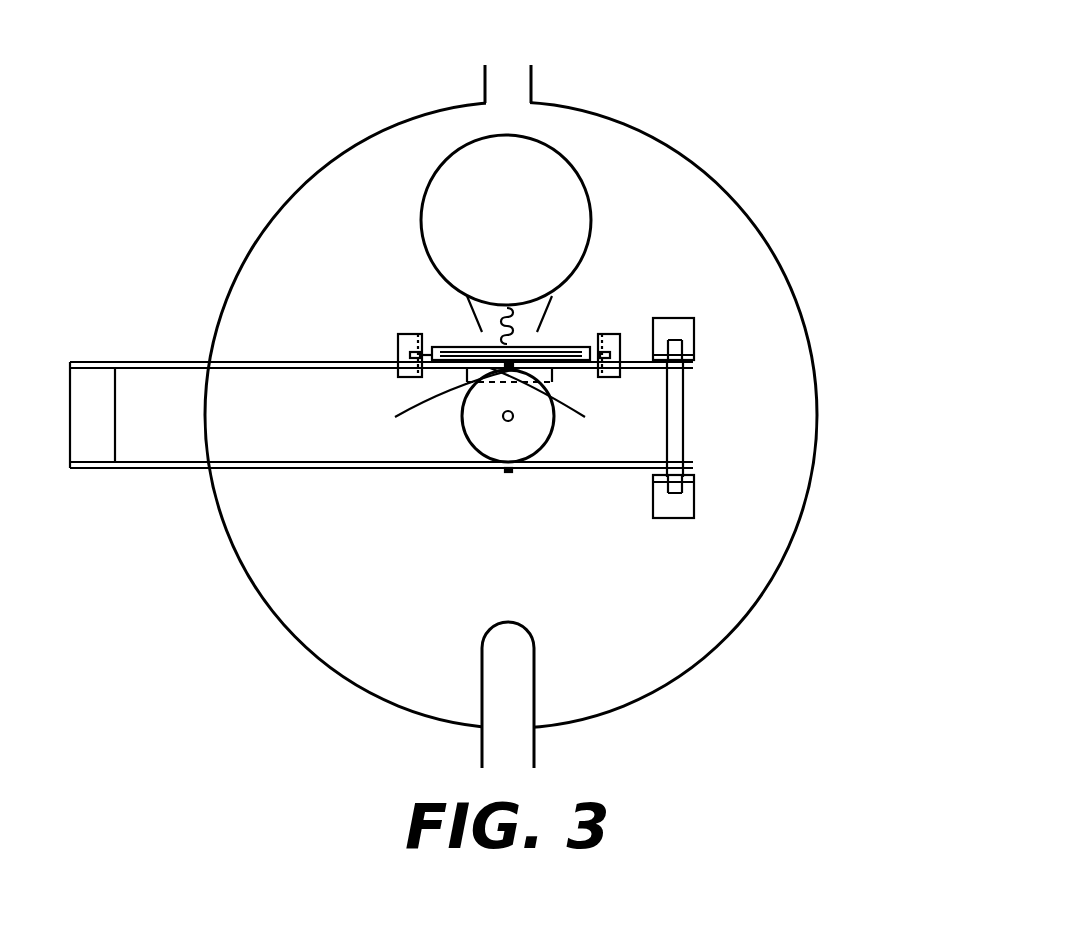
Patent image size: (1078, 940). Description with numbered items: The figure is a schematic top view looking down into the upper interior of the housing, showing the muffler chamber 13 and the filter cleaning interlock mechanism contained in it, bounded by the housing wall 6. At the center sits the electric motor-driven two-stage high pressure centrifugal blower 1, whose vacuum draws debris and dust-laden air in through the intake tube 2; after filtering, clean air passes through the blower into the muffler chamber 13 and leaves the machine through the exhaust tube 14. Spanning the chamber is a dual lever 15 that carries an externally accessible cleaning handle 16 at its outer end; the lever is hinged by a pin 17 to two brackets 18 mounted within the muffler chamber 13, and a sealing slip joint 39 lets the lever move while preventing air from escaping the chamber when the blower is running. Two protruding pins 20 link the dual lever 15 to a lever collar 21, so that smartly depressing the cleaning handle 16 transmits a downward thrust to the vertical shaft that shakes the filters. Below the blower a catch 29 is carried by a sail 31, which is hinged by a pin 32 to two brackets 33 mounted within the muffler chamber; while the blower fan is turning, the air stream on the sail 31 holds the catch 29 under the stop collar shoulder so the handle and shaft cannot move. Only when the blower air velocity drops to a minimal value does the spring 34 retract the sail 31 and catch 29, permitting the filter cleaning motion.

The centrifugal blower 1 is at (422, 222).
The intake tube 2 is at (534, 755).
The vessel housing 6 is at (753, 217).
The muffler chamber 13 is at (653, 190).
The exhaust tube 14 is at (532, 85).
The dual lever 15 is at (153, 360).
The cleaning handle 16 is at (117, 437).
The pin 17 is at (683, 430).
The brackets 18 is at (694, 335).
The protruding pins 20 is at (480, 513).
The lever collar 21 is at (467, 438).
The catch 29 is at (463, 390).
The sail 31 is at (432, 340).
The pin 32 is at (424, 333).
The brackets 33 is at (396, 350).
The spring 34 is at (535, 330).
The sealing slip joint 39 is at (208, 412).